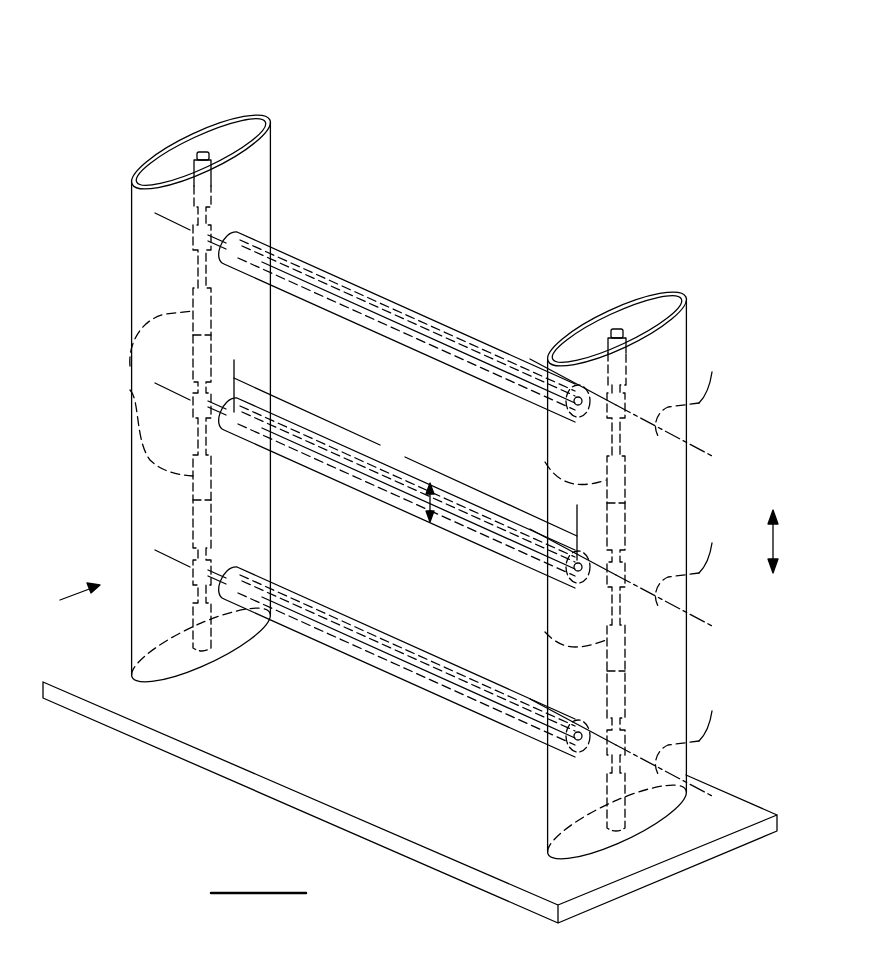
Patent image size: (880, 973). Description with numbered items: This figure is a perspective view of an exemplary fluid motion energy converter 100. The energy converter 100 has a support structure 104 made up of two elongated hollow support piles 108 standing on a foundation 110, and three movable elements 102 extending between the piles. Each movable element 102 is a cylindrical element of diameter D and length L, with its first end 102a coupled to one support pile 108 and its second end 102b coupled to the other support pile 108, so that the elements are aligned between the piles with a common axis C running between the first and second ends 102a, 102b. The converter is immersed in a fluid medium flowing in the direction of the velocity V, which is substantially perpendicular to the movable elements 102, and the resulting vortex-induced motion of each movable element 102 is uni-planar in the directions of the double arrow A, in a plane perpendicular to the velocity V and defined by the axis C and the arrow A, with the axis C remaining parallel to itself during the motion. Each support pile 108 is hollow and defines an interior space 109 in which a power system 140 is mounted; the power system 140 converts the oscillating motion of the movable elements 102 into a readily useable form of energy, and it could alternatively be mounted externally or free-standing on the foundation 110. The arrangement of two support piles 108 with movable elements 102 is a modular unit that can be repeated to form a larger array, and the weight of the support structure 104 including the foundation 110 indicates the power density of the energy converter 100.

The energy converter 100 is at (492, 244).
The movable element 102 is at (345, 312).
The first end of the movable element 102a is at (197, 250).
The second end of the movable element 102b is at (573, 380).
The support structure 104 is at (696, 510).
The support pile 108 is at (158, 509).
The interior space 109 is at (228, 143).
The foundation 110 is at (232, 735).
The power system 140 is at (130, 390).